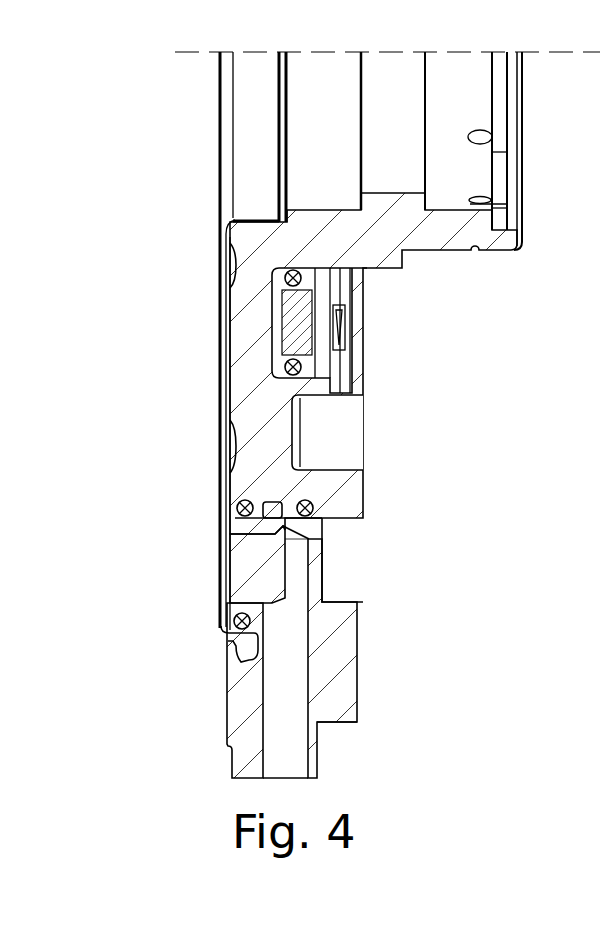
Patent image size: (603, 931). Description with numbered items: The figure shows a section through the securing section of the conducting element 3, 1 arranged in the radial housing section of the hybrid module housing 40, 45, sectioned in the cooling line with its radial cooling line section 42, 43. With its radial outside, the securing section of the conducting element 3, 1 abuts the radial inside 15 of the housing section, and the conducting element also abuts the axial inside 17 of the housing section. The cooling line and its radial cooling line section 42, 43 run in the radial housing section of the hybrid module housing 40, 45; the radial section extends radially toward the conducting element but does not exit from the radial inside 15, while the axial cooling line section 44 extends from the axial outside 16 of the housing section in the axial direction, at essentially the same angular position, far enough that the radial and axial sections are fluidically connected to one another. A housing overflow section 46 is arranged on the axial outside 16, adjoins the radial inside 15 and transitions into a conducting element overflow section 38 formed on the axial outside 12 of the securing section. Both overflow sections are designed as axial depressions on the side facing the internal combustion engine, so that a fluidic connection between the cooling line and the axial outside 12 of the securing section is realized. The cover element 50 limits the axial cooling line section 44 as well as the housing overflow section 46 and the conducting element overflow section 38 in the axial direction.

The valve housing 3, 1 is at (240, 380).
The axial outside of the securing section 12 is at (220, 343).
The cover element 50 is at (236, 428).
The conducting element overflow section 38 is at (236, 462).
The housing overflow section 46 is at (243, 518).
The axial cooling line section 44 is at (247, 578).
The radial inside of the housing section 15 is at (253, 534).
The axial inside of the housing section 17 is at (360, 630).
The axial outside of the housing section 16 is at (228, 690).
The threaded portion 40, 45 is at (330, 693).
The outlet channel 42, 43 is at (297, 742).